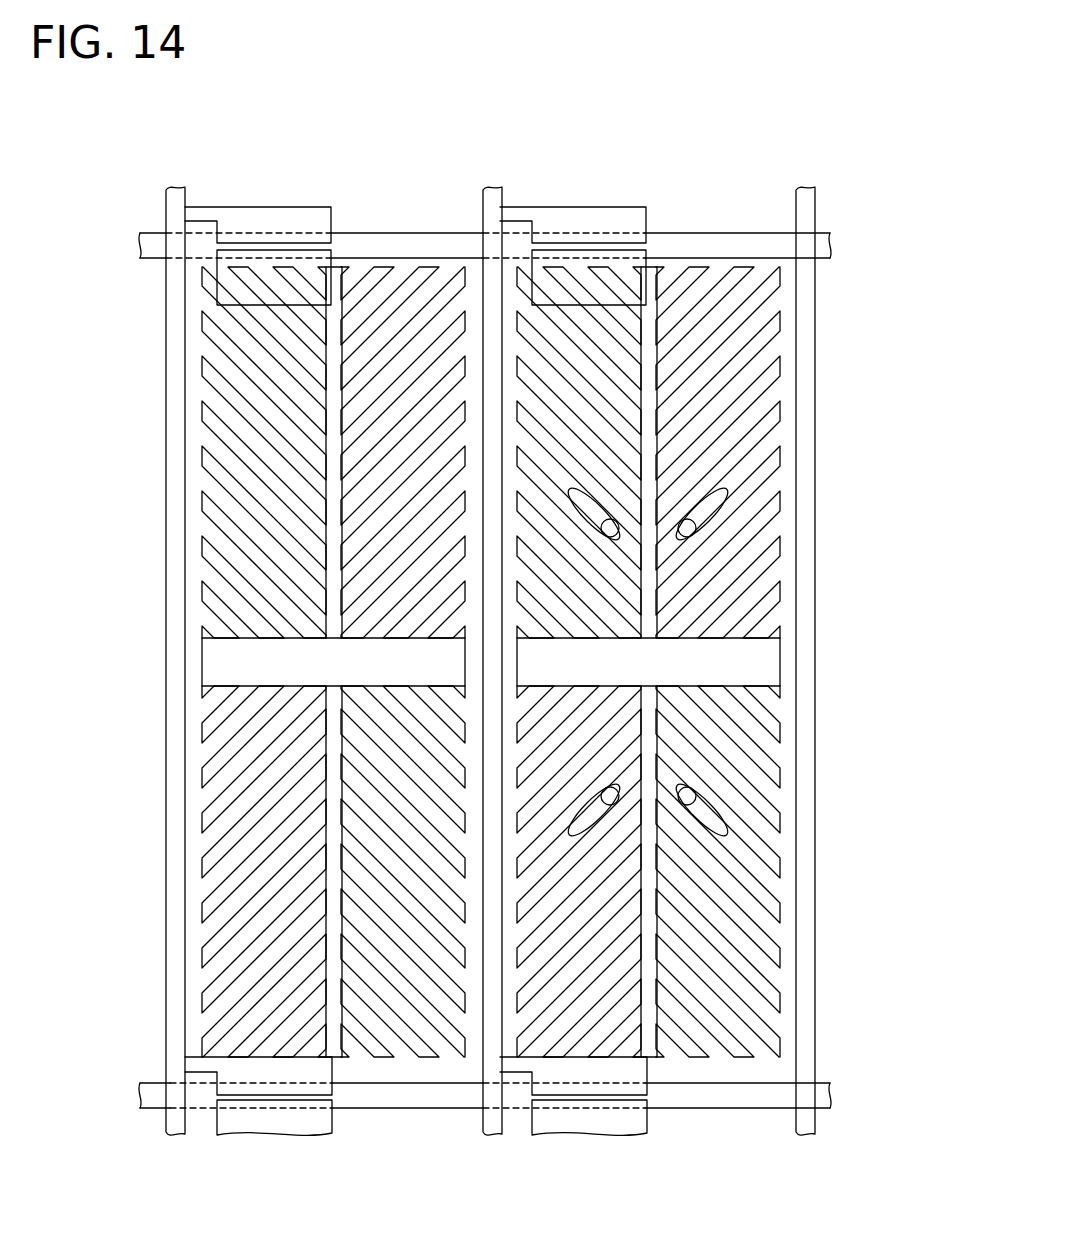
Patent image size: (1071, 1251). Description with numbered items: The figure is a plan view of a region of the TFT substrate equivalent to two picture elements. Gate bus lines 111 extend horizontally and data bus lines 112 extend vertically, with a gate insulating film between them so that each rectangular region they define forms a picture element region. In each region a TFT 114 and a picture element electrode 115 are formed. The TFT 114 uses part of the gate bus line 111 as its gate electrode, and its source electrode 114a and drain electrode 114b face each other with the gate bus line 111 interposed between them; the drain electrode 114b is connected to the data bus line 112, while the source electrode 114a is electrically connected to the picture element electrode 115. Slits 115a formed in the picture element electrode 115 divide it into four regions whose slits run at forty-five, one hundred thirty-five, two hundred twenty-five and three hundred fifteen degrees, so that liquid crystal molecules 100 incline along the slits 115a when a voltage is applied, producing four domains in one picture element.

The liquid crystal molecules 100 is at (705, 512).
The gate bus line 111 is at (152, 238).
The data bus line 112 is at (482, 188).
The TFT 114 is at (469, 630).
The source electrode 114a is at (298, 202).
The drain electrode 114b is at (272, 212).
The picture element electrode 115 is at (485, 662).
The slits 115a is at (212, 497).